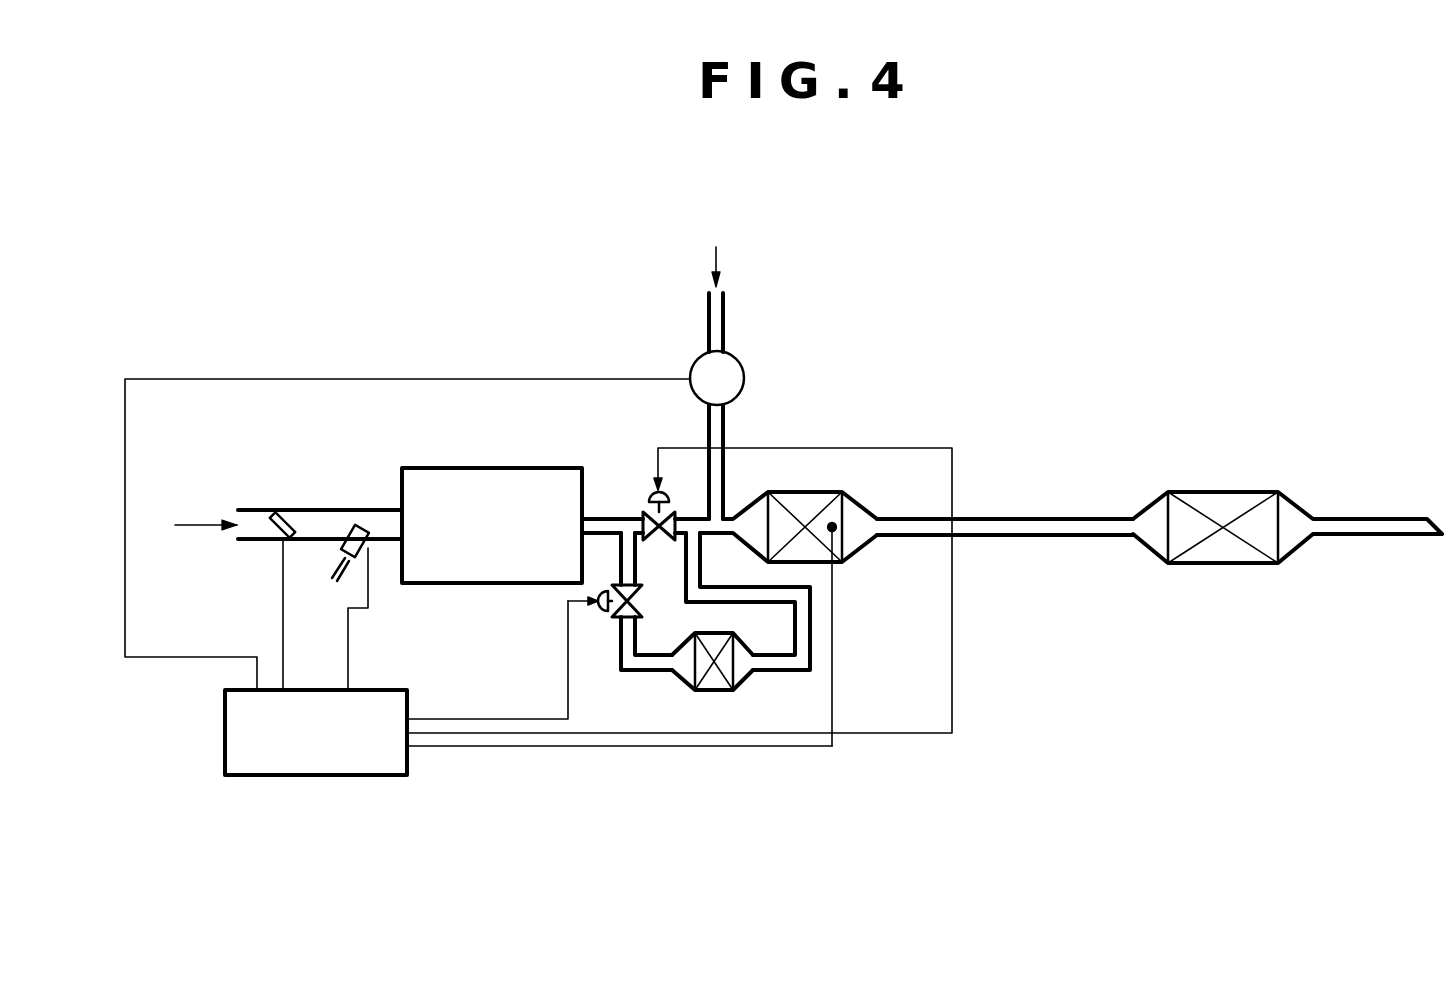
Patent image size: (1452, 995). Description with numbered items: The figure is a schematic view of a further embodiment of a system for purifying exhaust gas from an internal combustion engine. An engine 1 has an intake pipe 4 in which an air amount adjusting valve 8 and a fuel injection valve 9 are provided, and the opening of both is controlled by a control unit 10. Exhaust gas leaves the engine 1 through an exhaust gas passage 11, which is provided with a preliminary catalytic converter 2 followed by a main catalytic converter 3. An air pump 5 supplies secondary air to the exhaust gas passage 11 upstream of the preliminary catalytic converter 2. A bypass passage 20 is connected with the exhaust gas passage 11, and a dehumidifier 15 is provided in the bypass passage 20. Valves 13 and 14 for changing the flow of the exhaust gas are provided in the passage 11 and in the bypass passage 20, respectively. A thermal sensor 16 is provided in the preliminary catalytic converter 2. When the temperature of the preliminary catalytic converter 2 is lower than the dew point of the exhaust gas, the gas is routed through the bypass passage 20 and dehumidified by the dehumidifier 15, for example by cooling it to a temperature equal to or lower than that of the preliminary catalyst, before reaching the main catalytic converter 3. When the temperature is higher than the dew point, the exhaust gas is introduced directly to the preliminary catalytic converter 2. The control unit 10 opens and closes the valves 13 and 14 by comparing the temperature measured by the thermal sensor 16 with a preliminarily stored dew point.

The engine 1 is at (520, 468).
The preliminary catalytic converter 2 is at (800, 500).
The main catalytic converter 3 is at (1233, 492).
The intake pipe 4 is at (253, 510).
The air pump 5 is at (744, 362).
The air amount adjusting valve 8 is at (285, 510).
The fuel injection valve 9 is at (357, 528).
The control unit 10 is at (363, 778).
The exhaust gas passage 11 is at (1068, 519).
The valve 13 is at (648, 500).
The valve 14 is at (605, 610).
The dehumidifier 15 is at (715, 682).
The thermal sensor 16 is at (835, 530).
The bypass passage 20 is at (633, 670).